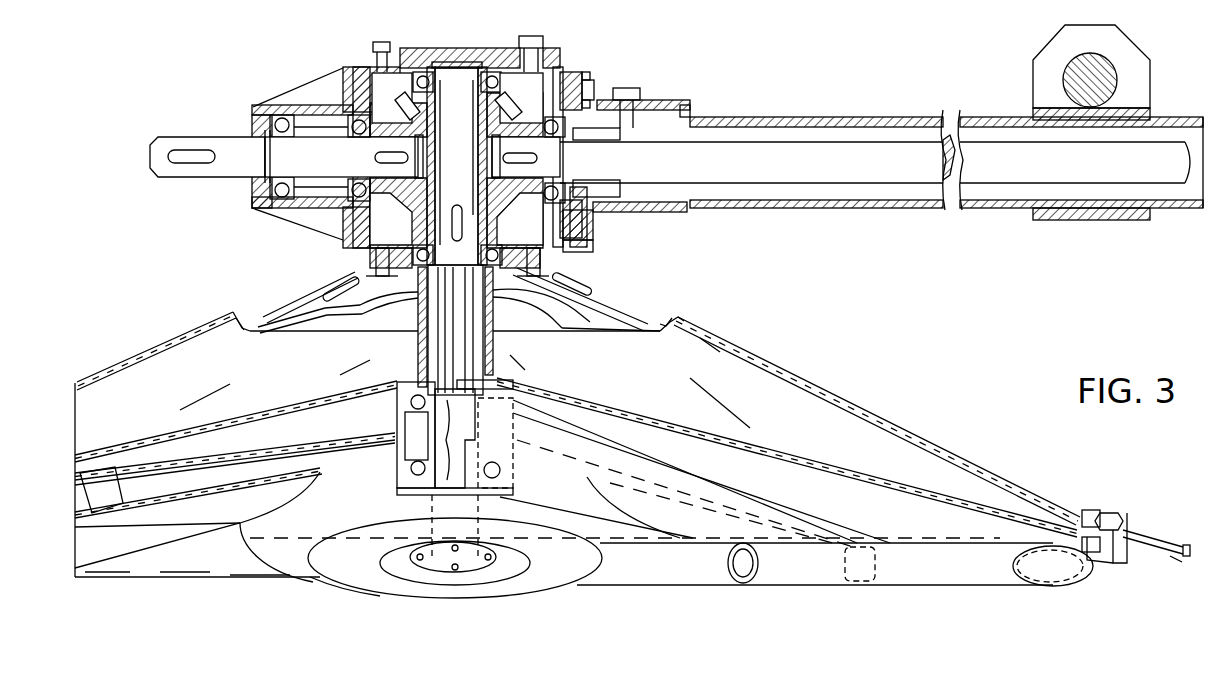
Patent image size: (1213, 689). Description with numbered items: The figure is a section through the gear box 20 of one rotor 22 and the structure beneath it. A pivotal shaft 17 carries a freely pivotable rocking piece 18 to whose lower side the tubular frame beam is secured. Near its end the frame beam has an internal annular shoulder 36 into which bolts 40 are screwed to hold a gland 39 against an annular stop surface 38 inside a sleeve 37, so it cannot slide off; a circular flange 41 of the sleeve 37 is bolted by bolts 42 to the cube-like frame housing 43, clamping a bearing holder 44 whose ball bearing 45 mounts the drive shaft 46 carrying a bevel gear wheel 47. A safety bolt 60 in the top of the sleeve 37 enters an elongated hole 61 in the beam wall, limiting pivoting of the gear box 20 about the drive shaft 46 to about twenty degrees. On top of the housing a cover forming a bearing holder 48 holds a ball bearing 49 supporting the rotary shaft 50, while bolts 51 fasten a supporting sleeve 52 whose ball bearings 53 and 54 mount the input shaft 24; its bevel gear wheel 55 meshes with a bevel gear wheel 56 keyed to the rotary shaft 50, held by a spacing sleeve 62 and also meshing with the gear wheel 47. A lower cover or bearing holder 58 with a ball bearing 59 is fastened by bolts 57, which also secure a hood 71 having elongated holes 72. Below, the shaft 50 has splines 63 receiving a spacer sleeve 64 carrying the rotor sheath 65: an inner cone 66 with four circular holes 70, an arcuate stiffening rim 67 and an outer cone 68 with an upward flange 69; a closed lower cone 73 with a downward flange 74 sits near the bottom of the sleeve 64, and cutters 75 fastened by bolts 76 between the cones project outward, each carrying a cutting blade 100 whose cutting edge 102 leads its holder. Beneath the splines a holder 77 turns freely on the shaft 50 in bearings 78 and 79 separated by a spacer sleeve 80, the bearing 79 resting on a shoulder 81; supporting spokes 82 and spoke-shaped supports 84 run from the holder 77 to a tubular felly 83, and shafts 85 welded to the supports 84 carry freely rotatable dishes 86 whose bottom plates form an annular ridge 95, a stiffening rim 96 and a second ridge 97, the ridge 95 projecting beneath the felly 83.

The pivotal shaft 17 is at (1066, 72).
The rocking piece 18 is at (1142, 86).
The gear box 20 is at (347, 68).
The rotor 22 is at (828, 352).
The input shaft 24 is at (210, 138).
The internal annular shoulder 36 is at (605, 178).
The sleeve 37 is at (680, 232).
The annular stop surface 38 is at (600, 232).
The gland 39 is at (598, 250).
The bolts 40 is at (655, 180).
The circular flange 41 is at (586, 78).
The bolts 42 is at (592, 80).
The frame housing 43 is at (568, 70).
The bearing holder 44 is at (545, 118).
The ball bearing 45 is at (515, 213).
The drive shaft 46 is at (944, 120).
The bevel gear wheel 47 is at (480, 120).
The cover forming a bearing holder 48 is at (445, 52).
The ball bearing 49 is at (498, 68).
The rotary shaft 50 is at (470, 50).
The bolts 51 is at (330, 70).
The supporting sleeve 52 is at (265, 104).
The ball bearing 53 is at (272, 212).
The ball bearing 54 is at (352, 148).
The bevel gear wheel 55 is at (388, 120).
The bevel gear wheel 56 is at (466, 212).
The bolts 57 is at (365, 268).
The lower cover or bearing holder 58 is at (545, 262).
The ball bearing 59 is at (432, 254).
The safety bolt 60 is at (645, 96).
The elongated hole 61 is at (680, 112).
The spacing sleeve 62 is at (440, 112).
The splines 63 is at (428, 342).
The spacer sleeve 64 is at (494, 346).
The rotor sheath 65 is at (906, 414).
The inner cone 66 is at (618, 330).
The stiffening rim 67 is at (666, 330).
The outer cone 68 is at (806, 380).
The flange 69 is at (1108, 512).
The circular holes 70 is at (572, 332).
The hood 71 is at (658, 304).
The elongated holes 72 is at (320, 292).
The lower cone 73 is at (626, 404).
The circular flange 74 is at (1118, 565).
The cutter 75 is at (1186, 543).
The bolts 76 is at (1094, 514).
The holder 77 is at (380, 452).
The bearing 78 is at (397, 418).
The bearing 79 is at (400, 472).
The spacer sleeve 80 is at (474, 434).
The shoulder 81 is at (425, 495).
The supporting spokes 82 is at (735, 490).
The felly 83 is at (790, 580).
The spoke-shaped support 84 is at (222, 432).
The shaft 85 is at (95, 462).
The dish 86 is at (160, 556).
The annular ridge 95 is at (310, 580).
The stiffening rim 96 is at (366, 590).
The second ridge 97 is at (512, 582).
The cutting blade 100 is at (1165, 530).
The cutting edge 102 is at (1182, 565).